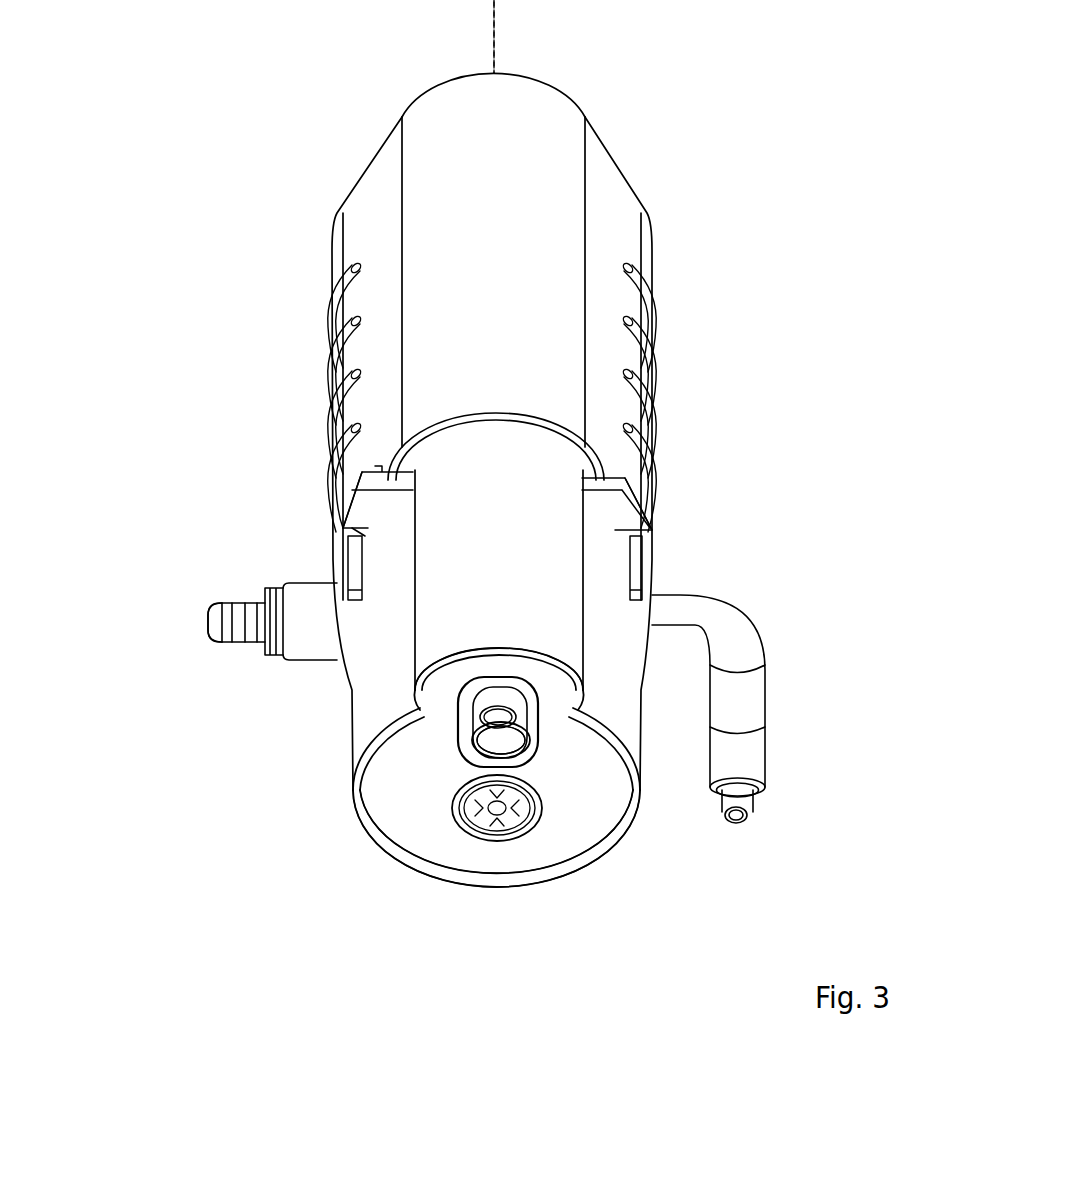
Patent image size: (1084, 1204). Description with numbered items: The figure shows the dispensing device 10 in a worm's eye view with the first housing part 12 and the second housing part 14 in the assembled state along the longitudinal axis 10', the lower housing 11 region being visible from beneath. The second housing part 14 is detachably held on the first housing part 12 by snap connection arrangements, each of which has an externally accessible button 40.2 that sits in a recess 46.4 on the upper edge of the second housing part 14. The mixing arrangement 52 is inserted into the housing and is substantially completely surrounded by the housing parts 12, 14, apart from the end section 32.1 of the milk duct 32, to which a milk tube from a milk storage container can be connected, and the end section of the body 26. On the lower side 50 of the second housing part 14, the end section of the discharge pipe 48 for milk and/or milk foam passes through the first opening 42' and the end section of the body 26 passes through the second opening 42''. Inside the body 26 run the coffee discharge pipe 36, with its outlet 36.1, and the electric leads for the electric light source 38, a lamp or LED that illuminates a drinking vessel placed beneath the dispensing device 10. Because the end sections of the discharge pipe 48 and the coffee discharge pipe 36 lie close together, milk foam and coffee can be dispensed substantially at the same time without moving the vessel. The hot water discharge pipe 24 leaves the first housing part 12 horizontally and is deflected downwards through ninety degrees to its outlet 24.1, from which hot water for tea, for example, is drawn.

The dispensing device 10 is at (663, 36).
The longitudinal axis 10' is at (529, 36).
The housing 11 is at (550, 480).
The first housing part 12 is at (358, 205).
The second housing part 14 is at (367, 745).
The hot water discharge pipe 24 is at (745, 808).
The outlet opening 24.1 is at (736, 830).
The body 26 is at (530, 705).
The milk duct 32 is at (255, 656).
The end section of the milk duct 32.1 is at (210, 612).
The coffee discharge pipe 36 is at (518, 710).
The secondary opening 36.1 is at (502, 719).
The electric light source 38 is at (506, 742).
The button 40.2 is at (405, 493).
The first opening 42' is at (475, 863).
The second opening 42'' is at (409, 696).
The recess 46.4 is at (372, 518).
The discharge pipe 48 is at (497, 842).
The lower side 50 is at (445, 865).
The mixing arrangement 52 is at (320, 568).